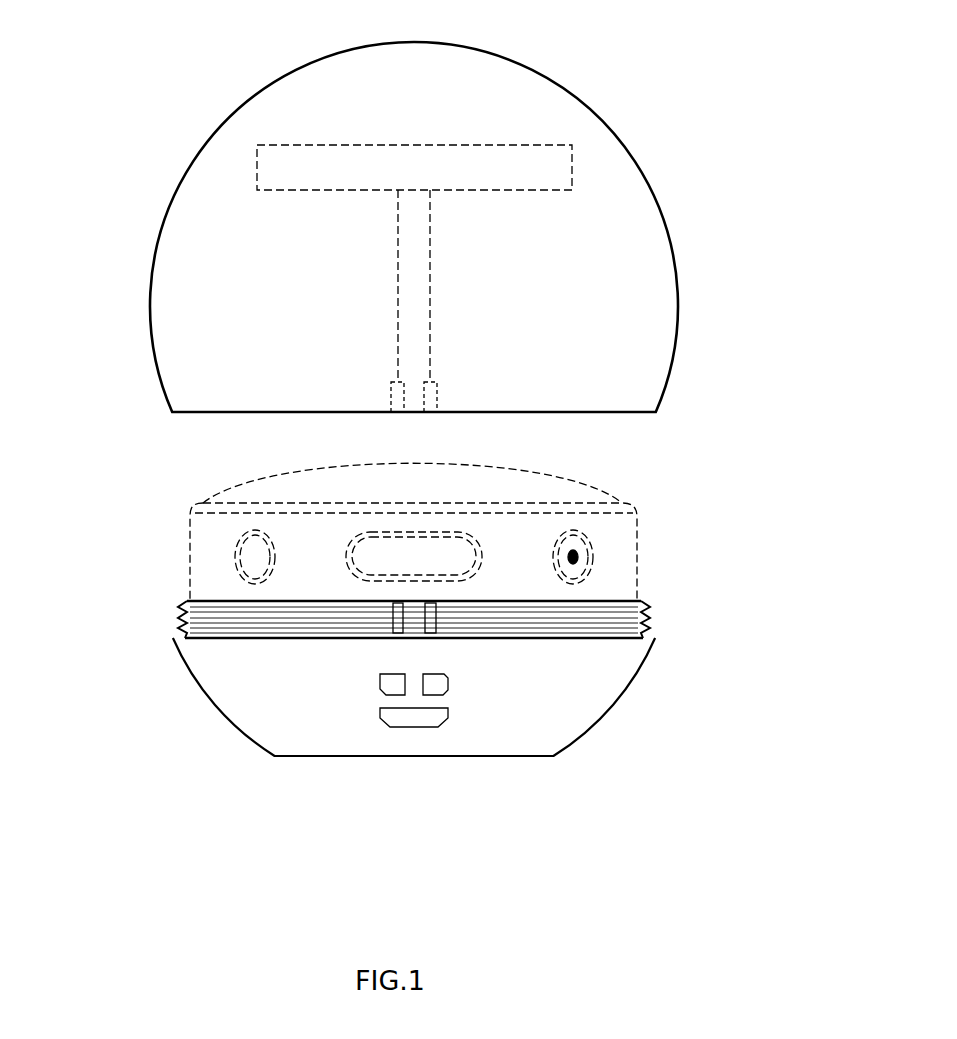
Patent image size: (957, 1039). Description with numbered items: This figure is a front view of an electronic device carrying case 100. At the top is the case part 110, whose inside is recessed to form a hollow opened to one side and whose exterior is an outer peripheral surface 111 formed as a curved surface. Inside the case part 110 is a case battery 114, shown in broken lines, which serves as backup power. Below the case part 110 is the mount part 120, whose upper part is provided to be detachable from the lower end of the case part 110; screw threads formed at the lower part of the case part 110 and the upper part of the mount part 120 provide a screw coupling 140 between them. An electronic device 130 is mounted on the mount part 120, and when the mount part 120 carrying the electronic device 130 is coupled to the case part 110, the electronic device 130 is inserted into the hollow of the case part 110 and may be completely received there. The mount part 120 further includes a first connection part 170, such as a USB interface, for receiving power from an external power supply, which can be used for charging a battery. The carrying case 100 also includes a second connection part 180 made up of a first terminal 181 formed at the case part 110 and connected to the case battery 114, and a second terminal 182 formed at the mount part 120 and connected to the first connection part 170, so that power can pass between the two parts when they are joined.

The electronic device carrying case 100 is at (160, 20).
The case part 110 is at (690, 327).
The outer peripheral surface 111 is at (672, 238).
The case battery 114 is at (547, 153).
The mount part 120 is at (645, 683).
The electronic device 130 is at (652, 549).
The screw coupling 140 is at (650, 618).
The first connection part 170 is at (417, 717).
The second connection part 180 is at (88, 430).
The first terminal 181 is at (393, 395).
The second terminal 182 is at (395, 603).